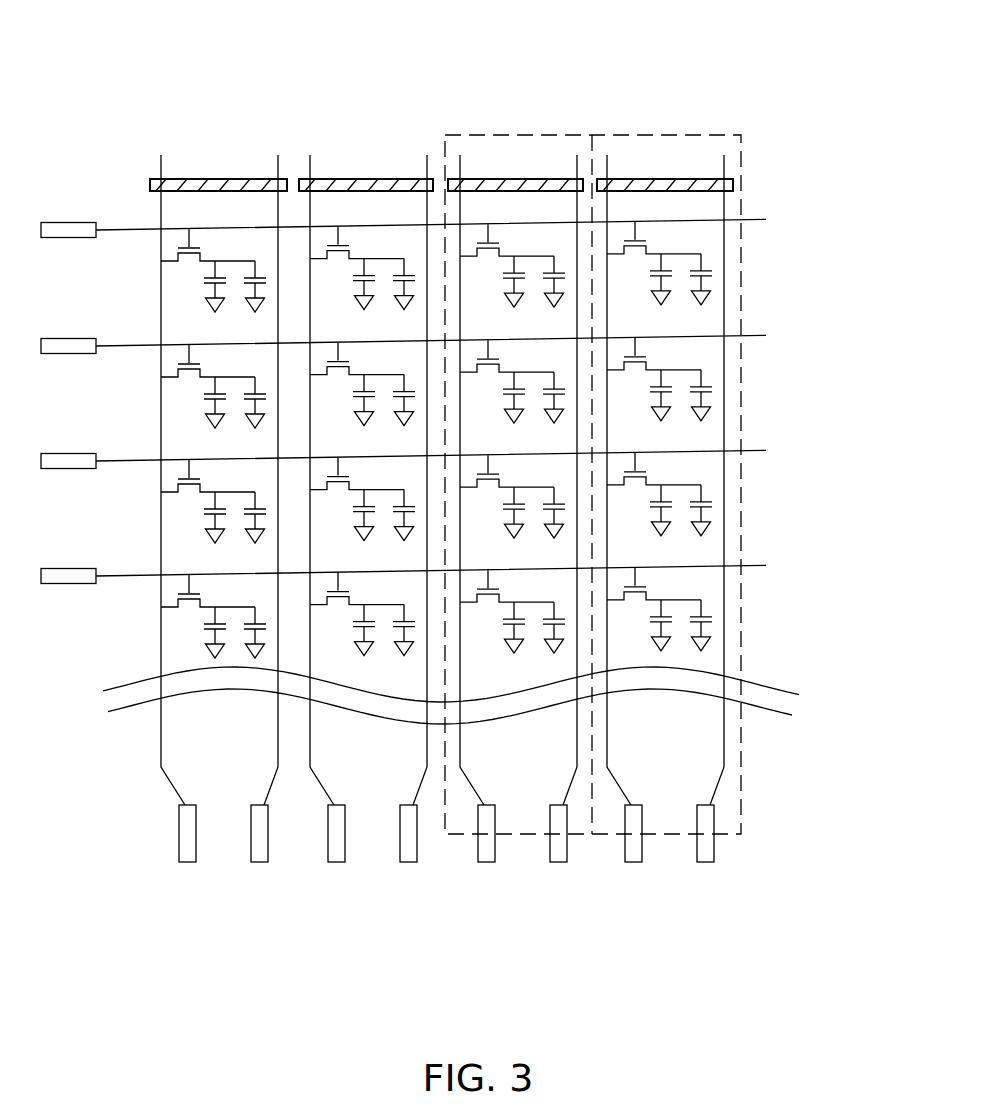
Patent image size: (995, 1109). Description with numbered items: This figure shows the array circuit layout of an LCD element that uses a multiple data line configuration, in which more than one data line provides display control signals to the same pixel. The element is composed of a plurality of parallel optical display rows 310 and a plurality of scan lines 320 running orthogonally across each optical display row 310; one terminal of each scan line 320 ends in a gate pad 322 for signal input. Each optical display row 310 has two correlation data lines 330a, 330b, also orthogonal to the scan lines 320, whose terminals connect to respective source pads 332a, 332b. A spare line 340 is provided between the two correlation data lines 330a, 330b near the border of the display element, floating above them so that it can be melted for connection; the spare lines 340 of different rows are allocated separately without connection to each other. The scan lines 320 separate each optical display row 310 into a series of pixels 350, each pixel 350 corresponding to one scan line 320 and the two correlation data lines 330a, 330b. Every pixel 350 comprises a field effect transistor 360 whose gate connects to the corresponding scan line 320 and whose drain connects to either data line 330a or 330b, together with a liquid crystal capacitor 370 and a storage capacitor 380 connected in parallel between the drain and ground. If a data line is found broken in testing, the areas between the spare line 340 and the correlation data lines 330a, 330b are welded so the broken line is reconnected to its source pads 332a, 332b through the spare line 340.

The optical display row 310 is at (520, 134).
The scan line 320 is at (758, 219).
The gate pad 322 is at (65, 222).
The correlation data line 330a is at (475, 788).
The correlation data line 330b is at (567, 780).
The source pad 332a is at (485, 863).
The source pad 332b is at (555, 862).
The spare line 340 is at (227, 179).
The pixel 350 is at (733, 436).
The field effect transistor 360 is at (657, 247).
The liquid crystal capacitor 370 is at (652, 275).
The storage capacitor 380 is at (715, 271).